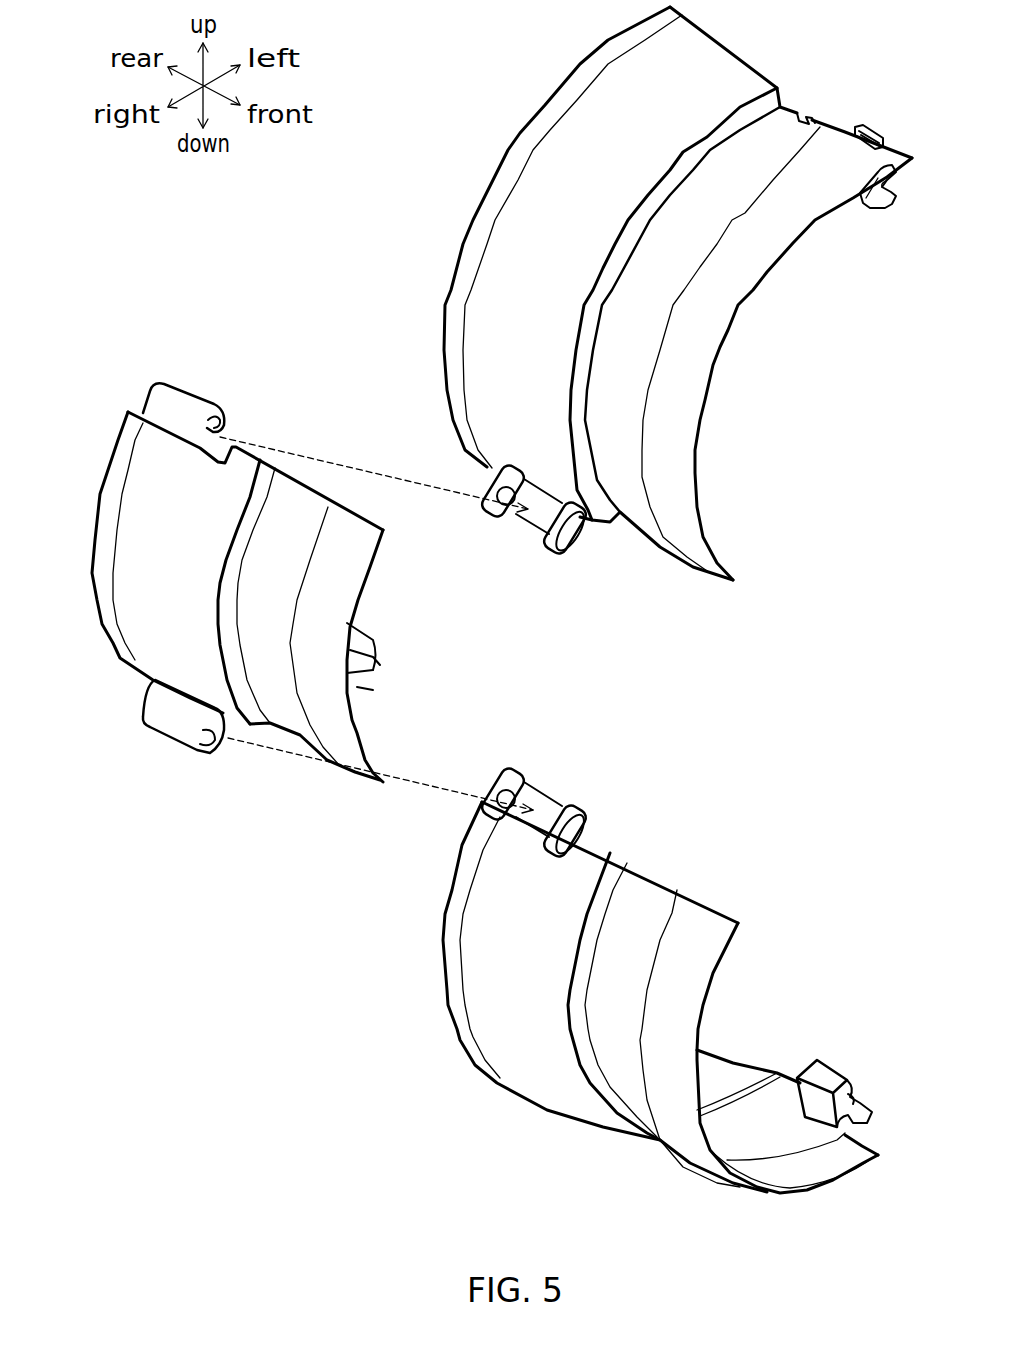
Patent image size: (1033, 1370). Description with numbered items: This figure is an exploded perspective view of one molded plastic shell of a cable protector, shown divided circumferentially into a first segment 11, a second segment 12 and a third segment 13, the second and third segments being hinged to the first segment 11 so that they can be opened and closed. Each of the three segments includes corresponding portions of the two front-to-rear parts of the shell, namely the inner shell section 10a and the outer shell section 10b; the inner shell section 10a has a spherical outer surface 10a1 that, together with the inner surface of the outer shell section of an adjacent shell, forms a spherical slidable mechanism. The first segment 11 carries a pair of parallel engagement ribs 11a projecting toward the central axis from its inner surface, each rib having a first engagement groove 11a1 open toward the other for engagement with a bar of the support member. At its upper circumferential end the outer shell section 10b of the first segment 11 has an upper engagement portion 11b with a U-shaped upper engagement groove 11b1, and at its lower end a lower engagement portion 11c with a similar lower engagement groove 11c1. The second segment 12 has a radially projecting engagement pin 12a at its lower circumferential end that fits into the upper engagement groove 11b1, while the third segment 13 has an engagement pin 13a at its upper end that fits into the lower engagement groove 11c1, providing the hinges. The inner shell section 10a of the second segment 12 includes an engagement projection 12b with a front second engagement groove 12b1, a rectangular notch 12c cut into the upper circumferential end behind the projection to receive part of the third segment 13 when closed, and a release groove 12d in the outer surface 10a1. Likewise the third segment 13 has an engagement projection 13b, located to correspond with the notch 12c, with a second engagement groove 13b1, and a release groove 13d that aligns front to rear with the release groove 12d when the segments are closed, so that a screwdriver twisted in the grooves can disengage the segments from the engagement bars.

The inner shell section 10a is at (740, 150).
The outer surface 10a1 is at (727, 277).
The outer shell section 10b is at (598, 112).
The first segment 11 is at (247, 594).
The engagement ribs 11a is at (373, 640).
The first engagement grooves 11a1 is at (373, 670).
The upper engagement portion 11b is at (157, 383).
The upper engagement groove 11b1 is at (220, 433).
The lower engagement portion 11c is at (140, 717).
The lower engagement groove 11c1 is at (208, 744).
The second segment 12 is at (587, 312).
The engagement pin 12a is at (527, 530).
The engagement projection 12b is at (870, 210).
The front second engagement groove 12b1 is at (889, 181).
The notch 12c is at (822, 127).
The release groove 12d is at (868, 128).
The third segment 13 is at (585, 956).
The engagement pin 13a is at (540, 800).
The engagement projection 13b is at (810, 1073).
The second engagement groove 13b1 is at (853, 1090).
The release groove 13d is at (855, 1128).